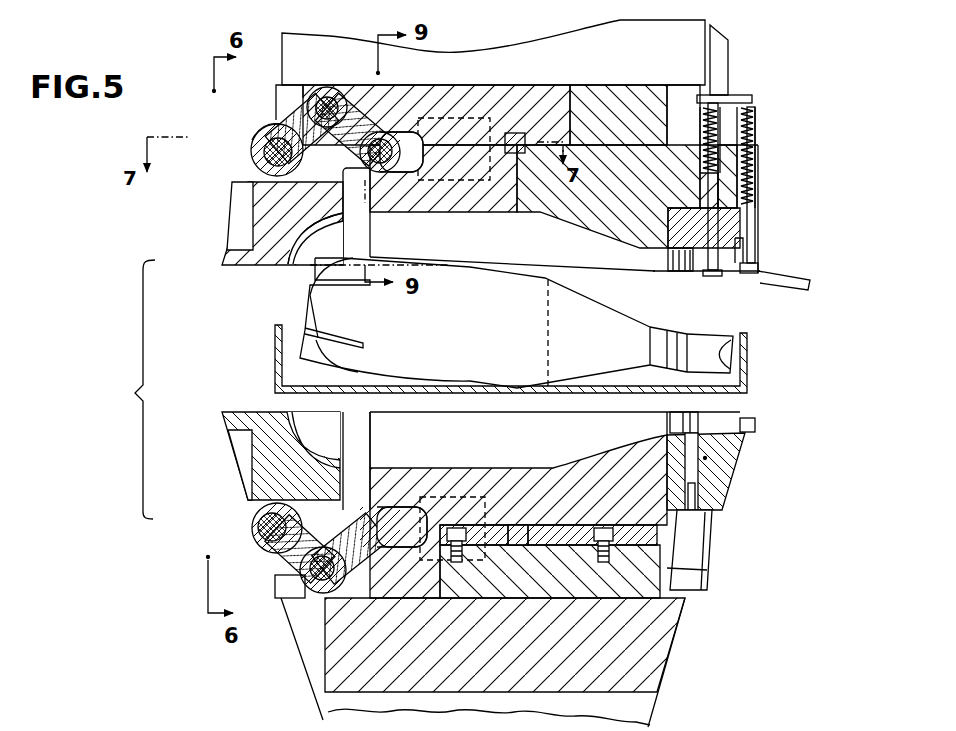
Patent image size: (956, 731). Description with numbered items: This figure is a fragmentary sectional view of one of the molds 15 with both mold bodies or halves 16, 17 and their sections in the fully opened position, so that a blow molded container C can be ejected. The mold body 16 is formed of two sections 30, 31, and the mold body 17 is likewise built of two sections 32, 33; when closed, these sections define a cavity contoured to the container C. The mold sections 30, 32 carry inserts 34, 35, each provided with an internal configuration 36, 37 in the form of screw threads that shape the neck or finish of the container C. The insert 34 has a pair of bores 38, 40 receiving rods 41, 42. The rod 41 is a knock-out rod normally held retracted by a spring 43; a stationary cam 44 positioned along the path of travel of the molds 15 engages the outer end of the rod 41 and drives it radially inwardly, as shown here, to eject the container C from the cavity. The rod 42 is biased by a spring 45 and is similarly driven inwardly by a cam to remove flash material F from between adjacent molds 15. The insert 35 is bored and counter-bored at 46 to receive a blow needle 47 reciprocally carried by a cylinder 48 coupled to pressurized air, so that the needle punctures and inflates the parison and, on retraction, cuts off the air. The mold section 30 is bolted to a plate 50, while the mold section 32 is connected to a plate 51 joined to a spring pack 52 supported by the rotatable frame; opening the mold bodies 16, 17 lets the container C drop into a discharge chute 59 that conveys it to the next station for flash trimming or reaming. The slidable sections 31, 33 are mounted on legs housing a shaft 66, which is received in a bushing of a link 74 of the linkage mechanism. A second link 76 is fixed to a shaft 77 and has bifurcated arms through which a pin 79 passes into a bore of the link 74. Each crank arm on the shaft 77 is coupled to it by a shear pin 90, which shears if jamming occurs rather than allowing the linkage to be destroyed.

The mold 15 is at (226, 345).
The mold body 16 is at (549, 206).
The mold body 17 is at (538, 480).
The mold section 30 is at (487, 203).
The mold section 31 is at (256, 207).
The mold section 32 is at (463, 472).
The mold section 33 is at (260, 467).
The insert 34 is at (725, 220).
The insert 35 is at (743, 457).
The internal configuration 36 is at (667, 266).
The internal configuration 37 is at (672, 430).
The bore 38 is at (712, 218).
The bore 40 is at (748, 228).
The knock-out rod 41 is at (725, 276).
The rod 42 is at (757, 155).
The spring 43 is at (698, 115).
The stationary cam 44 is at (745, 105).
The spring 45 is at (757, 128).
The bore and counter-bore 46 is at (708, 458).
The blow needle 47 is at (695, 480).
The cylinder 48 is at (698, 535).
The plate 50 is at (582, 102).
The plate 51 is at (690, 572).
The spring pack 52 is at (650, 638).
The discharge chute 59 is at (744, 384).
The shaft 66 is at (388, 172).
The link 74 is at (376, 132).
The link 76 is at (283, 124).
The shaft 77 is at (266, 153).
The pin 79 is at (327, 88).
The shear pin 90 is at (273, 122).
The container C is at (516, 336).
The flash material F is at (789, 283).